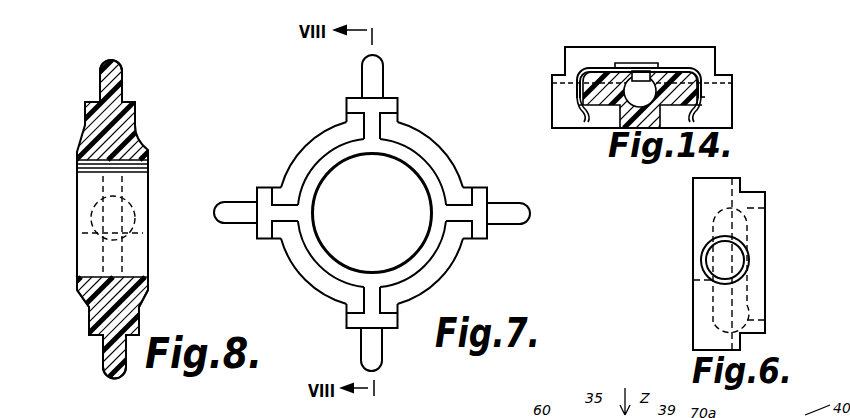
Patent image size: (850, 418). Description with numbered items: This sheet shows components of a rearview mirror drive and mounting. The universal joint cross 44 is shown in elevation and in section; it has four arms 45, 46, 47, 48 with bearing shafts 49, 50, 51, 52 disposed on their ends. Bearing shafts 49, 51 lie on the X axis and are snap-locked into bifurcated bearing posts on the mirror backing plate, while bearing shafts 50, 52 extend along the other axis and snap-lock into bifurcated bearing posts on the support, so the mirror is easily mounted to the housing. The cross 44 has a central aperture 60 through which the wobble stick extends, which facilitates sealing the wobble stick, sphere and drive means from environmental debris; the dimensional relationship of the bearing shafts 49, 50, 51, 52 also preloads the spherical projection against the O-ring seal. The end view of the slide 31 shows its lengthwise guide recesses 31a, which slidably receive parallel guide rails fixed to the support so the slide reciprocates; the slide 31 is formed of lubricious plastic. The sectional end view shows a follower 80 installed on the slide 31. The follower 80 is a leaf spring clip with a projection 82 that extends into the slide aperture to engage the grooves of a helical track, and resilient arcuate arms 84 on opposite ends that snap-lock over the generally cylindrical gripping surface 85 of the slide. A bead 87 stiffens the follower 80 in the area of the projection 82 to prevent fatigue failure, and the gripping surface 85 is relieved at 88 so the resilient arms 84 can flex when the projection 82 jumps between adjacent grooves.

In FIG. 14, the slide member 31 is at (627, 110).
In FIG. 6, the slide member 31 is at (703, 238).
In FIG. 14, the guide recess 31a is at (563, 76).
In FIG. 6, the guide recess 31a is at (745, 191).
In FIG. 8, the cross 44 is at (80, 138).
In FIG. 7, the cross 44 is at (405, 137).
In FIG. 7, the arm 45 is at (482, 188).
In FIG. 8, the arm 46 is at (86, 112).
In FIG. 7, the arm 46 is at (348, 101).
In FIG. 8, the arm 47 is at (151, 197).
In FIG. 7, the arm 47 is at (263, 240).
In FIG. 8, the arm 48 is at (136, 330).
In FIG. 7, the arm 48 is at (396, 320).
In FIG. 7, the bearing shaft 49 is at (532, 196).
In FIG. 8, the bearing shaft 50 is at (118, 64).
In FIG. 7, the bearing shaft 50 is at (378, 67).
In FIG. 8, the bearing shaft 51 is at (76, 250).
In FIG. 7, the bearing shaft 51 is at (222, 198).
In FIG. 8, the bearing shaft 52 is at (103, 372).
In FIG. 7, the bearing shaft 52 is at (391, 372).
In FIG. 8, the central aperture 60 is at (85, 192).
In FIG. 7, the central aperture 60 is at (398, 180).
In FIG. 14, the follower 80 is at (681, 66).
In FIG. 14, the projection 82 is at (639, 70).
In FIG. 14, the resilient arcuate arm 84 is at (583, 112).
In FIG. 14, the gripping surface 85 is at (703, 97).
In FIG. 14, the bead 87 is at (651, 66).
In FIG. 14, the relief 88 is at (579, 66).